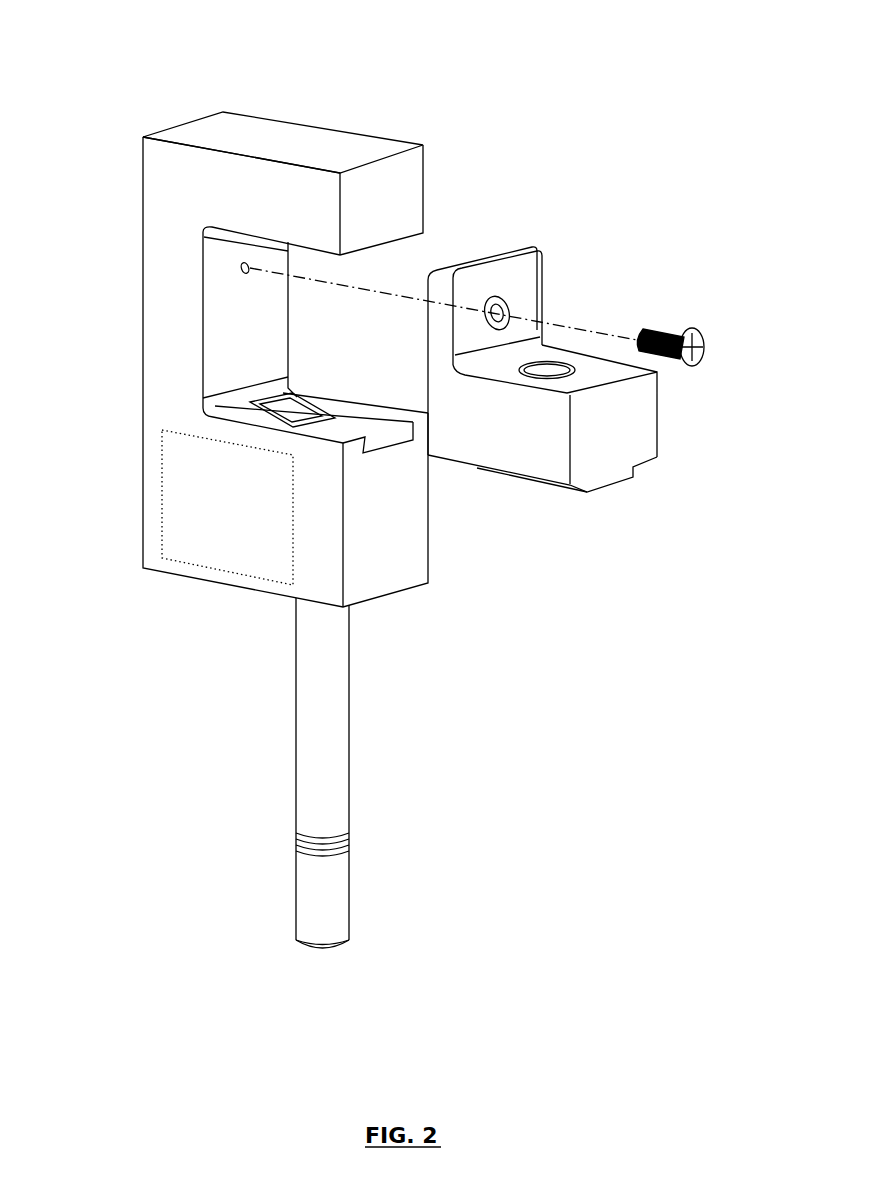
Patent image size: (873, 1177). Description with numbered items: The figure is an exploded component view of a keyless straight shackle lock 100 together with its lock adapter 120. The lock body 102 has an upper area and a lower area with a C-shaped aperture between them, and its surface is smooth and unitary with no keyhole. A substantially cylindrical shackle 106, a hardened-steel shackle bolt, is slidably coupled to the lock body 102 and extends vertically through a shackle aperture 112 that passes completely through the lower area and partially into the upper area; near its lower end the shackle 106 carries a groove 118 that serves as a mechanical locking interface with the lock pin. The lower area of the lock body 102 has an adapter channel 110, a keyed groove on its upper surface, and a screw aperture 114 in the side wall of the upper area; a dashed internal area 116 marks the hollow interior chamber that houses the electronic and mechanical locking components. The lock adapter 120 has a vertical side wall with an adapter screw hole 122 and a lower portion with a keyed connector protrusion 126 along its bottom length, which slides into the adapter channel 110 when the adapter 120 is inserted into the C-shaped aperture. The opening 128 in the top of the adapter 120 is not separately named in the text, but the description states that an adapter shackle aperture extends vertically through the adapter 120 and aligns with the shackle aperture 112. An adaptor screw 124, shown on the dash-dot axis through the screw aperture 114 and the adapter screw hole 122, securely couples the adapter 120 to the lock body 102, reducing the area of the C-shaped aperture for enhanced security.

The keyless straight shackle lock 100 is at (66, 78).
The lock body 102 is at (341, 128).
The shackle 106 is at (309, 957).
The adapter channel 110 is at (390, 451).
The shackle aperture 112 is at (330, 428).
The screw aperture 114 is at (221, 268).
The internal area 116 is at (200, 528).
The groove 118 is at (349, 839).
The lock adapter 120 is at (651, 447).
The adapter screw hole 122 is at (508, 290).
The adaptor screw 124 is at (715, 358).
The connector protrusion 126 is at (574, 505).
The base aperture 128 is at (589, 376).